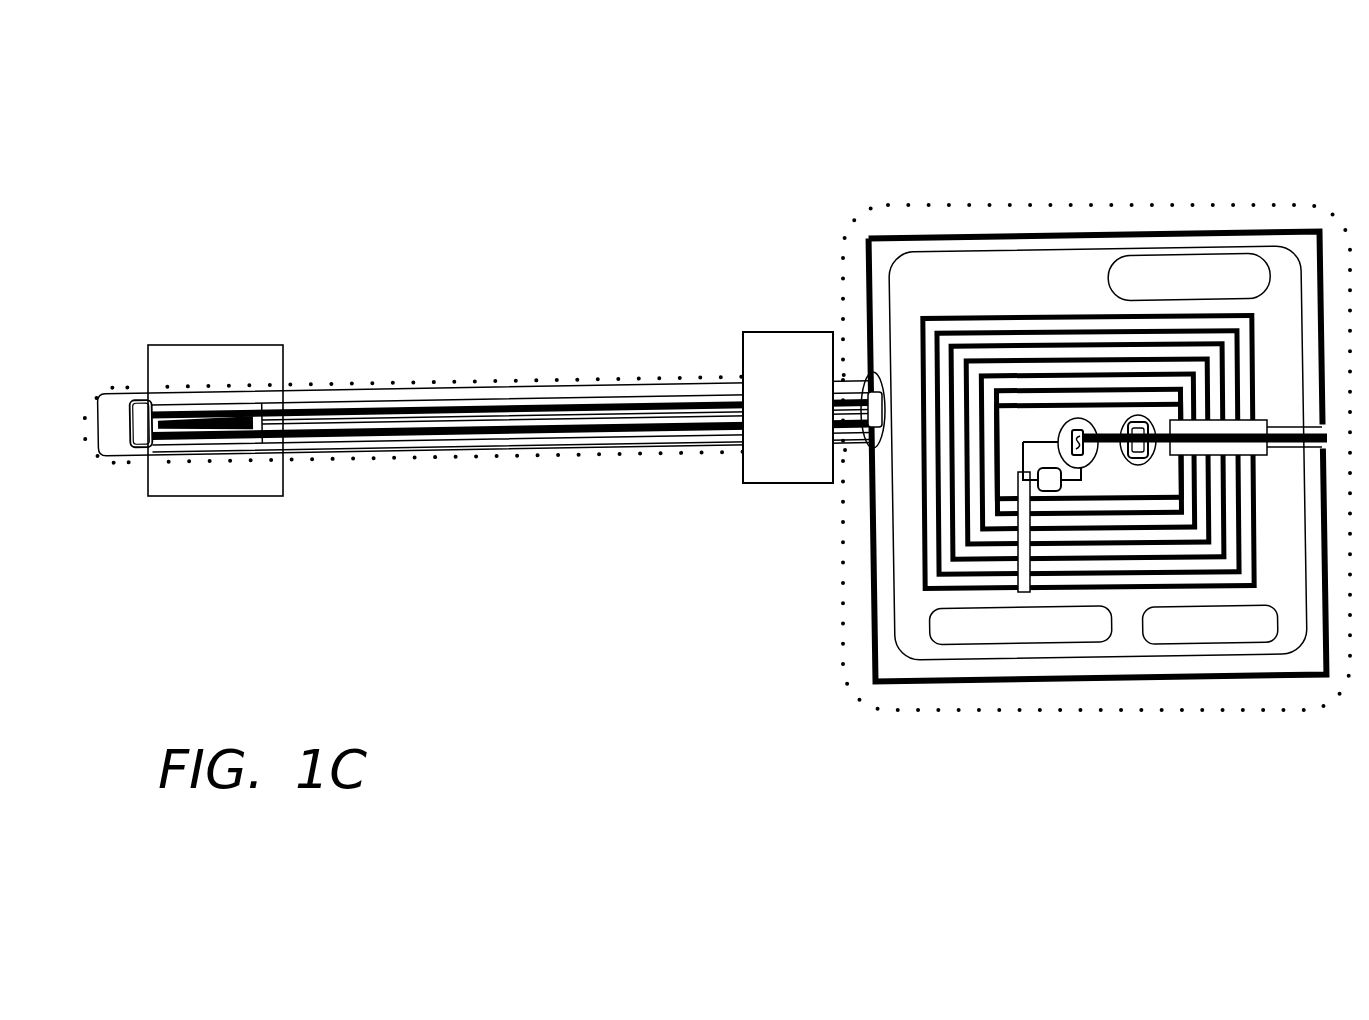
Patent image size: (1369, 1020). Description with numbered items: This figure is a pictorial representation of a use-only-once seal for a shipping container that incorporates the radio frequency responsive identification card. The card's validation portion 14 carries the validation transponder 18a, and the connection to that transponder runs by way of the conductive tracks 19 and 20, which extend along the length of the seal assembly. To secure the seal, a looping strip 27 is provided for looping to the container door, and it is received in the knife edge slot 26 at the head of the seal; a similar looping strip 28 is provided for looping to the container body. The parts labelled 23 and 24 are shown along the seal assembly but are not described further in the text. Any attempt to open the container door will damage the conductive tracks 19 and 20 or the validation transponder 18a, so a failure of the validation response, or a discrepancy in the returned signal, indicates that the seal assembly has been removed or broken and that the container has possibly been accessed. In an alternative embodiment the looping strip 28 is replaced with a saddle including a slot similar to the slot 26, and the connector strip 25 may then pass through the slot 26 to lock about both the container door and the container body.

The validation portion 14 is at (862, 370).
The validation transponder 18a is at (147, 388).
The conductive track 19 is at (417, 407).
The conductive track 20 is at (463, 445).
The insulator 23 is at (277, 399).
The strain relief 24 is at (780, 378).
The connector strip 25 is at (588, 454).
The knife edge slot 26 is at (191, 416).
The looping strip 27 is at (241, 479).
The looping strip 28 is at (764, 483).